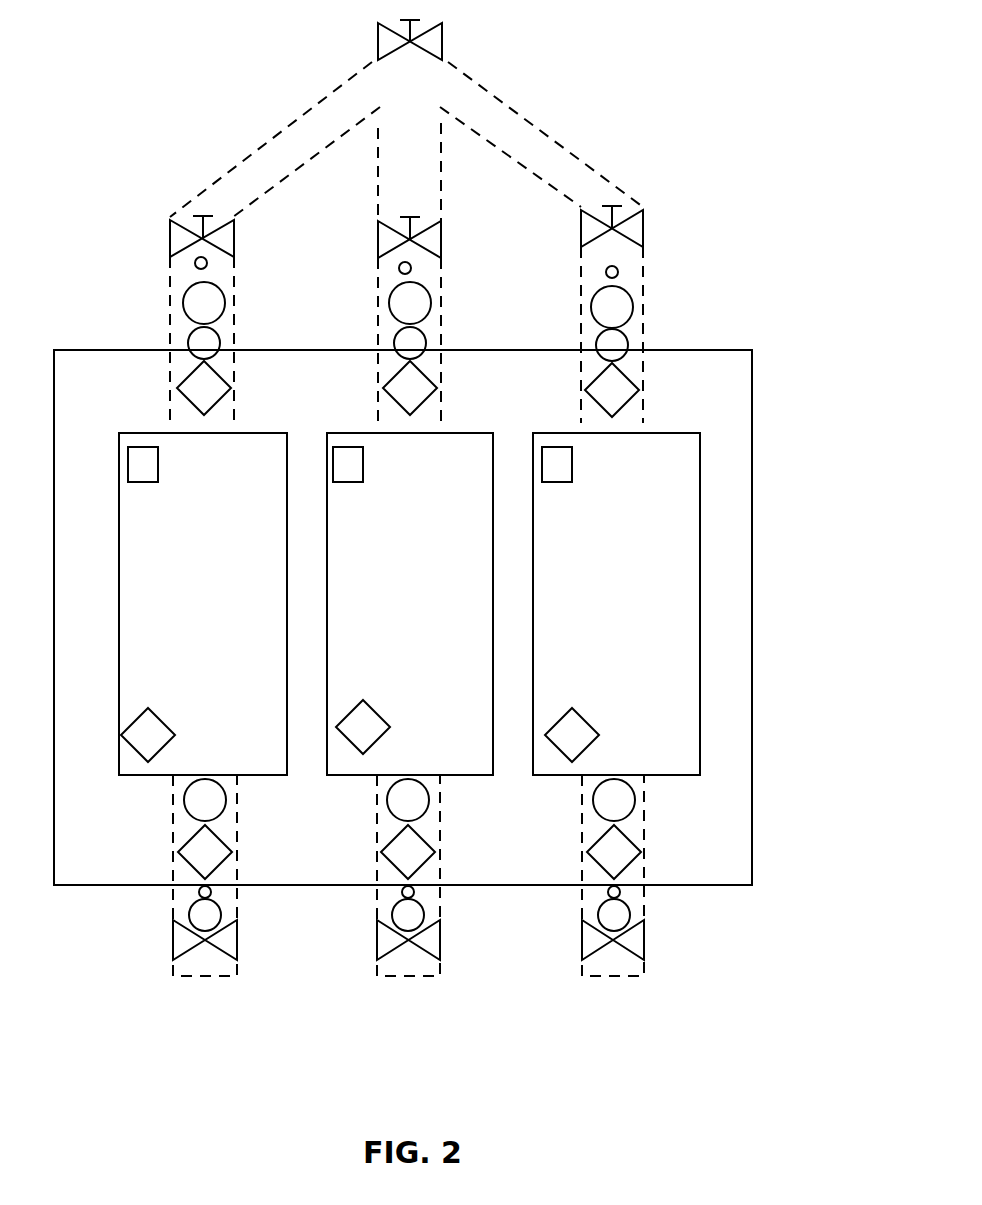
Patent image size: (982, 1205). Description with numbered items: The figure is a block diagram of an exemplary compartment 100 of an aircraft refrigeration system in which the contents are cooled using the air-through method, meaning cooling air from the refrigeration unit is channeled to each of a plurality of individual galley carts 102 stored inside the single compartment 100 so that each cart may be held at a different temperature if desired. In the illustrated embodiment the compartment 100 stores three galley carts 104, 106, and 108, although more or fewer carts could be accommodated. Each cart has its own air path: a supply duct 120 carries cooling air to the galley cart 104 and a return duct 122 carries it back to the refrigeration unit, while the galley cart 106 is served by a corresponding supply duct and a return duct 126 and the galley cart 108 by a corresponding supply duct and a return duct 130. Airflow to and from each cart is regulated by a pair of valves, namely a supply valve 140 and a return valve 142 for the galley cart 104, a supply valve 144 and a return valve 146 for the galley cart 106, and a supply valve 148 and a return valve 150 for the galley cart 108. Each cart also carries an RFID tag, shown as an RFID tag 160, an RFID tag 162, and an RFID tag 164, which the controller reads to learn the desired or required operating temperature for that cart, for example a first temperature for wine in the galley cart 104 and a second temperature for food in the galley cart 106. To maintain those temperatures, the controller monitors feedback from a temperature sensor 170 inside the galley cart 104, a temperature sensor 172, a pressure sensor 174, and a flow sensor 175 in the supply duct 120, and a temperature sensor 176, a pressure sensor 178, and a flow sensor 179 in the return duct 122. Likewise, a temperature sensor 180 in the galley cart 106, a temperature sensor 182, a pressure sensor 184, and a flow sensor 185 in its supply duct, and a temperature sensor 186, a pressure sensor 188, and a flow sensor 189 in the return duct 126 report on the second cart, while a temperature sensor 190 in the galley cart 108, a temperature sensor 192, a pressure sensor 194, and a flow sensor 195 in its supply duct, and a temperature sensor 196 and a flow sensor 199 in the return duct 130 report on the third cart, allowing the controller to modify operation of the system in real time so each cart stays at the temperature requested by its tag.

The compartment 100 is at (742, 815).
The galley cart 102 is at (112, 533).
The galley cart 104 is at (212, 613).
The galley cart 106 is at (445, 618).
The galley cart 108 is at (630, 620).
The supply duct 120 is at (195, 265).
The return duct 122 is at (199, 891).
The return duct 126 is at (402, 891).
The return duct 130 is at (608, 891).
The supply valve 140 is at (236, 231).
The return valve 142 is at (230, 943).
The supply valve 144 is at (441, 231).
The return valve 146 is at (433, 943).
The supply valve 148 is at (643, 222).
The return valve 150 is at (640, 935).
The RFID tag 160 is at (158, 452).
The RFID tag 162 is at (363, 452).
The RFID tag 164 is at (572, 452).
The temperature sensor 170 is at (163, 722).
The temperature sensor 172 is at (177, 388).
The pressure sensor 174 is at (218, 291).
The flow sensor 175 is at (189, 343).
The temperature sensor 176 is at (232, 852).
The pressure sensor 178 is at (186, 799).
The flow sensor 179 is at (180, 921).
The temperature sensor 180 is at (378, 714).
The temperature sensor 182 is at (383, 388).
The pressure sensor 184 is at (424, 291).
The flow sensor 185 is at (395, 343).
The temperature sensor 186 is at (435, 852).
The pressure sensor 188 is at (389, 799).
The flow sensor 189 is at (383, 921).
The temperature sensor 190 is at (586, 722).
The temperature sensor 192 is at (585, 390).
The pressure sensor 194 is at (627, 293).
The flow sensor 195 is at (597, 345).
The temperature sensor 196 is at (641, 852).
The flow sensor 199 is at (588, 921).